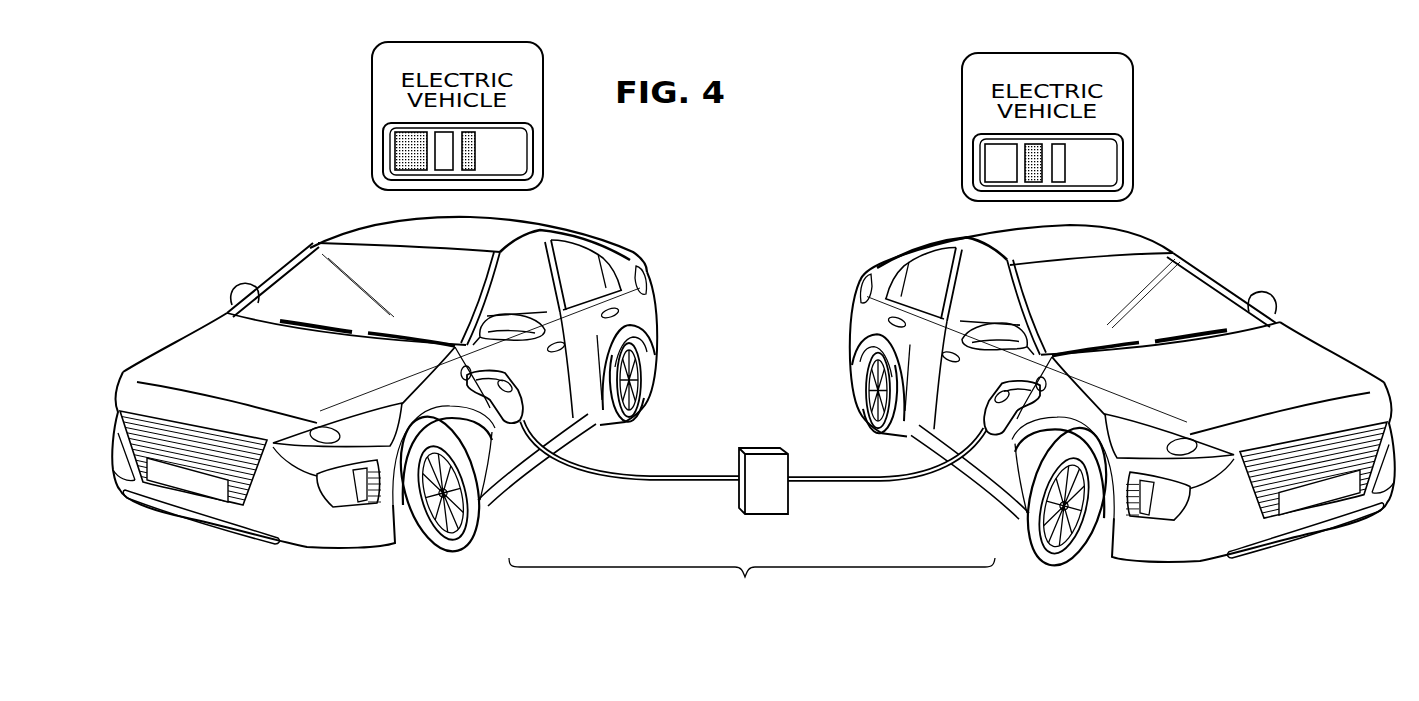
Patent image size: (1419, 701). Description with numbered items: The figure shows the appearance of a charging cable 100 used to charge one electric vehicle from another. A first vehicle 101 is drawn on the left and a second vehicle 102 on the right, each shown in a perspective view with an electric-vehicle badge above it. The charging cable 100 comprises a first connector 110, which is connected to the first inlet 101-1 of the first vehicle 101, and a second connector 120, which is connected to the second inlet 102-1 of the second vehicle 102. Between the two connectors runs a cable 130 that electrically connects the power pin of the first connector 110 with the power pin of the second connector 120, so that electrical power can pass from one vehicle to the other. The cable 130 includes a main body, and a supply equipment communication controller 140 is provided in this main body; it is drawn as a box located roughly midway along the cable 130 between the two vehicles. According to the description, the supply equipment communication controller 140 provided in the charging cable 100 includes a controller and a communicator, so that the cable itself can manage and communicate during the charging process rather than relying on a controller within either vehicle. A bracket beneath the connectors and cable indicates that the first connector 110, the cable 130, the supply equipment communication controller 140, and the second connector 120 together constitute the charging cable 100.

The charging cable 100 is at (752, 581).
The first vehicle 101 is at (321, 242).
The first inlet 101-1 is at (462, 372).
The second vehicle 102 is at (1158, 244).
The charging inlet of second electric vehicle 102-1 is at (1045, 385).
The first connector 110 is at (497, 425).
The second connector 120 is at (992, 432).
The cable 130 is at (830, 484).
The supply equipment communication controller 140 is at (775, 502).